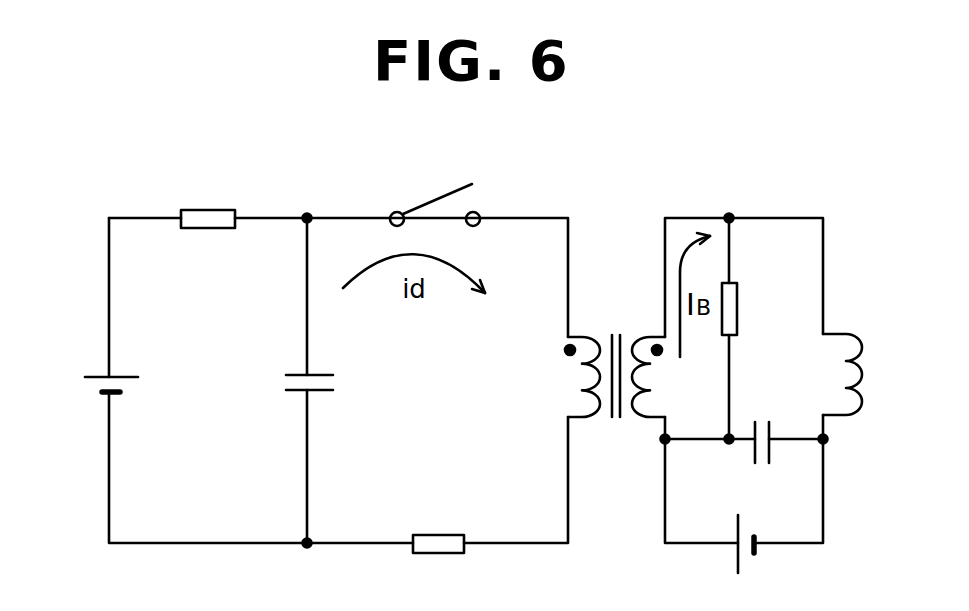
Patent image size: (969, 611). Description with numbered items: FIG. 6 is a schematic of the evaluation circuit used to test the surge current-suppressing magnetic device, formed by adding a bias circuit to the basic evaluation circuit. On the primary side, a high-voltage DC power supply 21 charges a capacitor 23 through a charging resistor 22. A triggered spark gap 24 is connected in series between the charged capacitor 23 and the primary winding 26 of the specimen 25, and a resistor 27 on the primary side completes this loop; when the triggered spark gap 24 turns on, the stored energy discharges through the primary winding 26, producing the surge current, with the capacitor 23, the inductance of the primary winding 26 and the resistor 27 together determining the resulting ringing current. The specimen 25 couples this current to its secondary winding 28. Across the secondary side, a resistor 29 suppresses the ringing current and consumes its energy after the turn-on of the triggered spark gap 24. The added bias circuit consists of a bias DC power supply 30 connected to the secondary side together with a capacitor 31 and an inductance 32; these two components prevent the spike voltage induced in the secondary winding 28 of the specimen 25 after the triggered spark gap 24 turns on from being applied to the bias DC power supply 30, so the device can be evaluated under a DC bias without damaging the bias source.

The high-voltage DC power supply 21 is at (87, 386).
The resistor 22 is at (208, 198).
The capacitor 23 is at (292, 361).
The triggered spark gap 24 is at (435, 185).
The specimen 25 is at (617, 354).
The primary winding 26 is at (561, 377).
The resistor 27 is at (438, 567).
The secondary winding 28 is at (671, 377).
The resistor 29 is at (756, 309).
The bias DC power supply 30 is at (768, 555).
The capacitor 31 is at (785, 427).
The inductance 32 is at (869, 374).